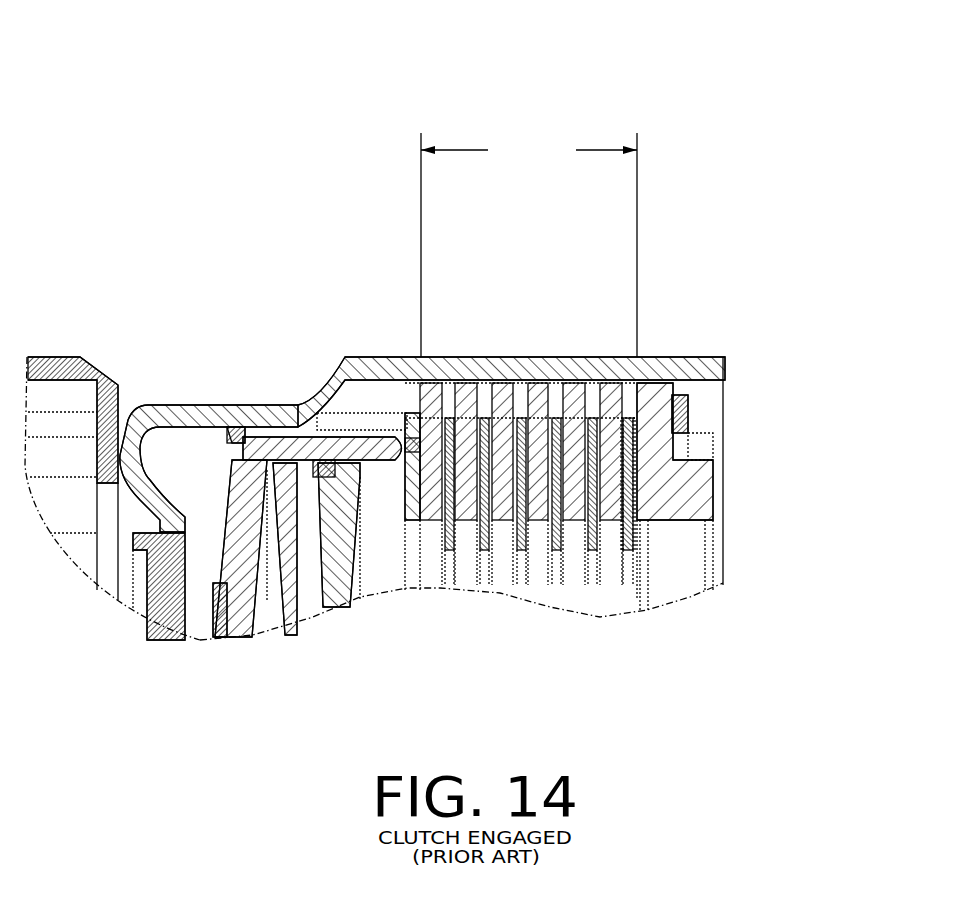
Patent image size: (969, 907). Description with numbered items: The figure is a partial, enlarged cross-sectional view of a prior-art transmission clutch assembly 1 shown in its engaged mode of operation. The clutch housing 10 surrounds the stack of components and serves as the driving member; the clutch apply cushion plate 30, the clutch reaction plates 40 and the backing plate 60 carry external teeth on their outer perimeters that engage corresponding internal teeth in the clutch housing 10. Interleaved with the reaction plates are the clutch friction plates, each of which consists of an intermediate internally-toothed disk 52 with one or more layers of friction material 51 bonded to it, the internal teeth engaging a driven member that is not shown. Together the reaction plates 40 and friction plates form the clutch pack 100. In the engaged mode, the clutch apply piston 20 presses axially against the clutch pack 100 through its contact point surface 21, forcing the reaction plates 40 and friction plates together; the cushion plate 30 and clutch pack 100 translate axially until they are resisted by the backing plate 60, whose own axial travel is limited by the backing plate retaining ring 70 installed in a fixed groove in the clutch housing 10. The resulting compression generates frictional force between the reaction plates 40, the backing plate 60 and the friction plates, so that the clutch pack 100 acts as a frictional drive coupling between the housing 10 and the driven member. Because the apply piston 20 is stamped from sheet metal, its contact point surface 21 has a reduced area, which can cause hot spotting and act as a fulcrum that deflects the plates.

The clutch assembly 1 is at (376, 321).
The clutch pack 100 is at (529, 197).
The clutch housing 10 is at (422, 423).
The clutch apply piston 20 is at (307, 421).
The clutch apply cushion plate 30 is at (365, 398).
The contact point surface 21 is at (619, 488).
The clutch reaction plates 40 is at (437, 380).
The friction material 51 is at (623, 417).
The internally-toothed disk 52 is at (627, 555).
The backing plate 60 is at (714, 408).
The backing plate retaining ring 70 is at (770, 319).